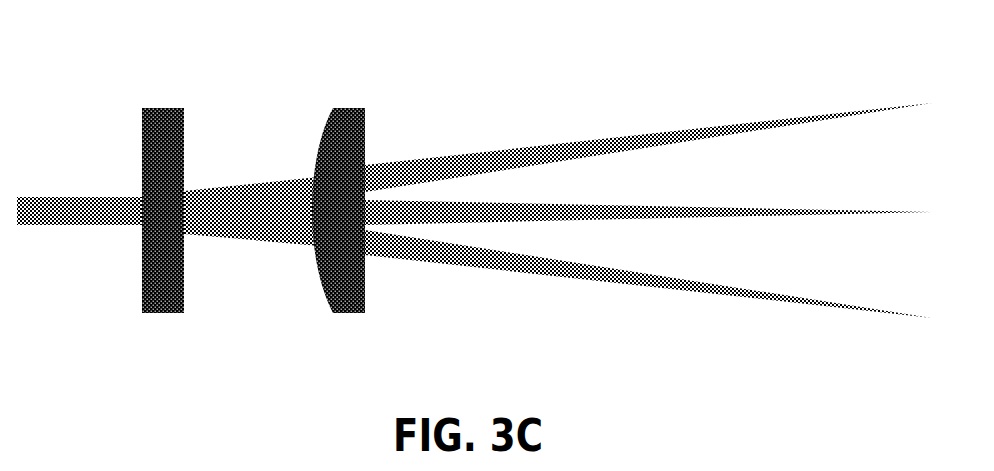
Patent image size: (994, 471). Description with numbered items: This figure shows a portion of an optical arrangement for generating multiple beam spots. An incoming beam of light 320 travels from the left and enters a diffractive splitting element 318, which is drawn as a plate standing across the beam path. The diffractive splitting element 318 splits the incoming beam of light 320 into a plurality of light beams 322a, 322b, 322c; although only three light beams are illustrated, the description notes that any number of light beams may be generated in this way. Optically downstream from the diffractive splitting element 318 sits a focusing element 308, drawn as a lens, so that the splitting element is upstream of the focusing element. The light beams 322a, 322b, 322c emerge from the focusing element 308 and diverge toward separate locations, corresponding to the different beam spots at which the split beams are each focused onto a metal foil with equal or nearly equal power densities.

The incoming beam of light 320 is at (43, 198).
The diffractive splitting element 318 is at (163, 107).
The focusing element 308 is at (362, 107).
The light beam 322a is at (683, 132).
The light beam 322b is at (742, 207).
The light beam 322c is at (750, 290).